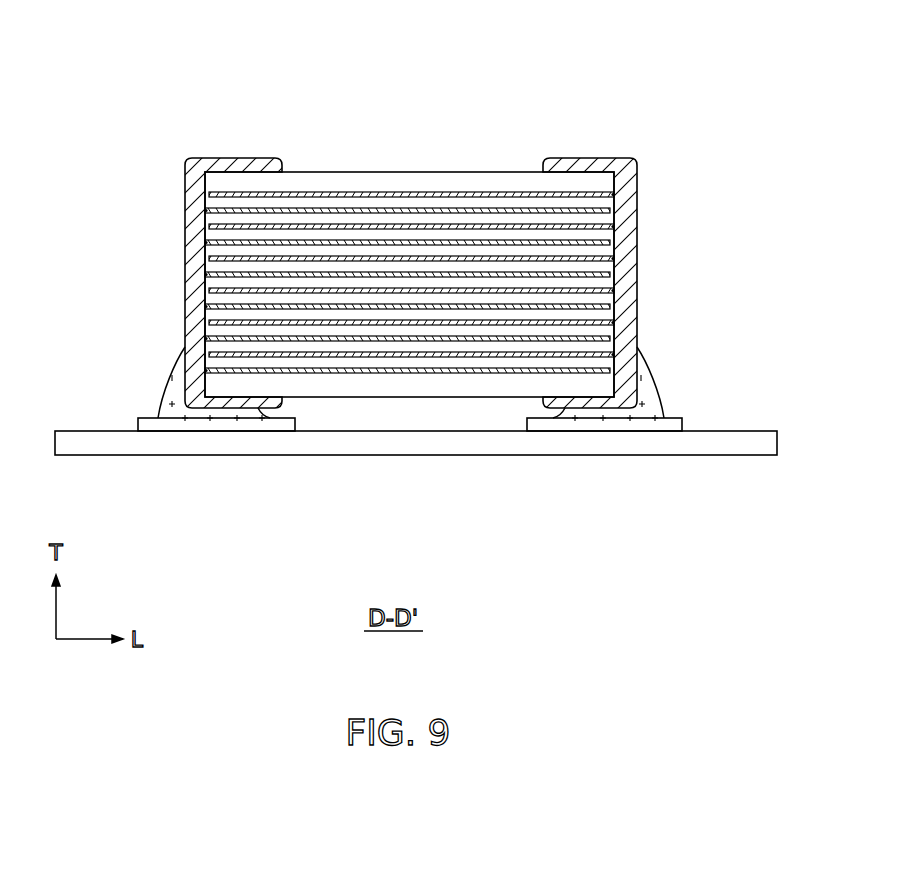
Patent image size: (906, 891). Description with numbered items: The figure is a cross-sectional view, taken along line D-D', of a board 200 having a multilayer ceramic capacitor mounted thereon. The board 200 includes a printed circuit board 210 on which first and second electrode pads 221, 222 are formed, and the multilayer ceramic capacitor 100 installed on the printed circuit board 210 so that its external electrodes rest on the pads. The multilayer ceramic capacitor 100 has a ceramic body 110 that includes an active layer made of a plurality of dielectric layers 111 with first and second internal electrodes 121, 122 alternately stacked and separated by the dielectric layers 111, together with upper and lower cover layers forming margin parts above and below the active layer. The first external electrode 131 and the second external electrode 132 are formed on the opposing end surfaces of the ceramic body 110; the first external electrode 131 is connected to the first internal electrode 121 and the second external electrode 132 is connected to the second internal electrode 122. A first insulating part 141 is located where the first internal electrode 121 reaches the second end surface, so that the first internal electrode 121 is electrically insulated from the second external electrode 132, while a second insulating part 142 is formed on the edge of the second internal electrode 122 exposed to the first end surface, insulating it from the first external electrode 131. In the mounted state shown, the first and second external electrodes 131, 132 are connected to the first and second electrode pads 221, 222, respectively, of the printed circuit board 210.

The board having a multilayer ceramic capacitor mounted thereon 200 is at (185, 23).
The multilayer ceramic capacitor 100 is at (428, 148).
The ceramic body 110 is at (318, 178).
The dielectric layer 111 is at (507, 220).
The first internal electrode 121 is at (367, 192).
The second internal electrode 122 is at (457, 206).
The first external electrode 131 is at (246, 158).
The second external electrode 132 is at (612, 158).
The first insulating part 141 is at (612, 229).
The second insulating part 142 is at (205, 243).
The printed circuit board 210 is at (432, 455).
The first electrode pad 221 is at (245, 431).
The second electrode pad 222 is at (613, 431).